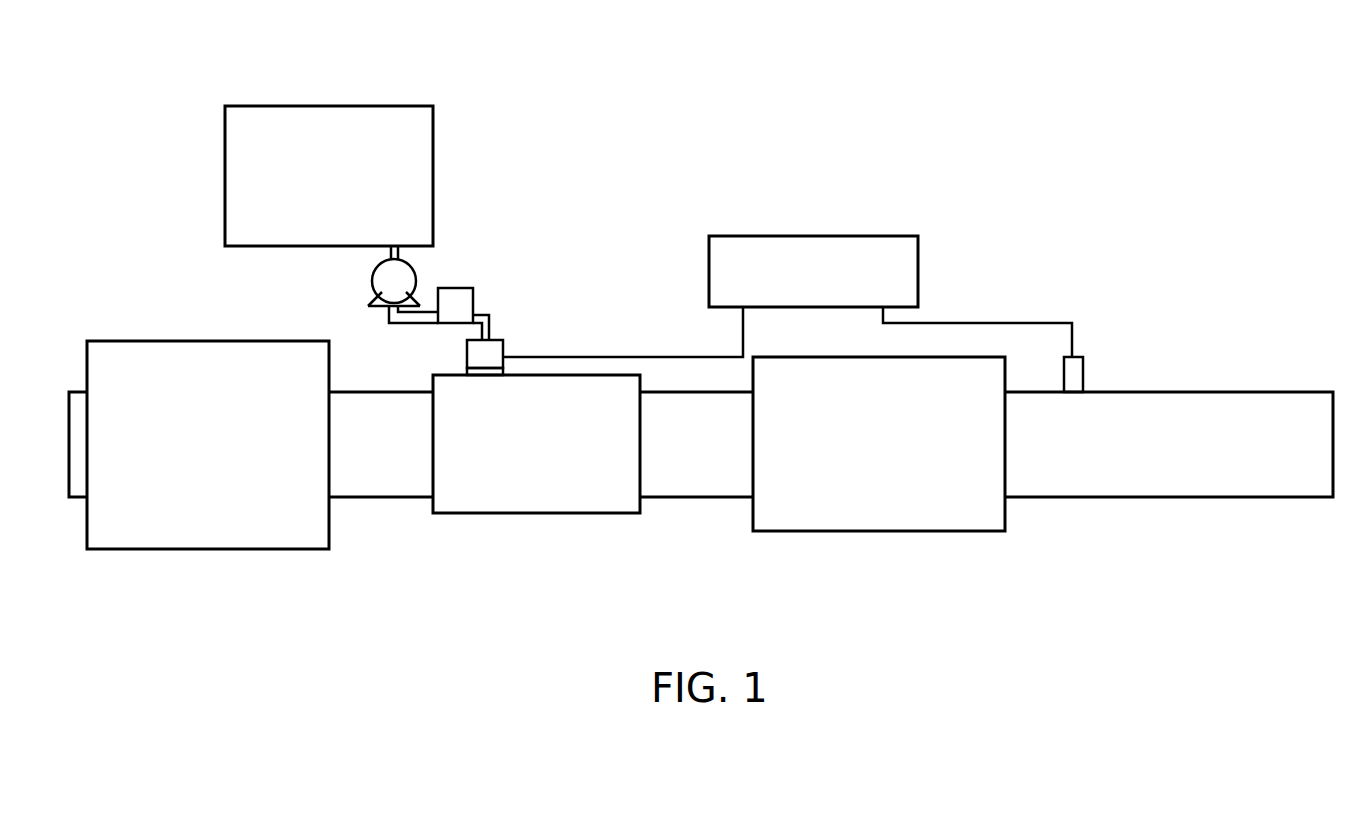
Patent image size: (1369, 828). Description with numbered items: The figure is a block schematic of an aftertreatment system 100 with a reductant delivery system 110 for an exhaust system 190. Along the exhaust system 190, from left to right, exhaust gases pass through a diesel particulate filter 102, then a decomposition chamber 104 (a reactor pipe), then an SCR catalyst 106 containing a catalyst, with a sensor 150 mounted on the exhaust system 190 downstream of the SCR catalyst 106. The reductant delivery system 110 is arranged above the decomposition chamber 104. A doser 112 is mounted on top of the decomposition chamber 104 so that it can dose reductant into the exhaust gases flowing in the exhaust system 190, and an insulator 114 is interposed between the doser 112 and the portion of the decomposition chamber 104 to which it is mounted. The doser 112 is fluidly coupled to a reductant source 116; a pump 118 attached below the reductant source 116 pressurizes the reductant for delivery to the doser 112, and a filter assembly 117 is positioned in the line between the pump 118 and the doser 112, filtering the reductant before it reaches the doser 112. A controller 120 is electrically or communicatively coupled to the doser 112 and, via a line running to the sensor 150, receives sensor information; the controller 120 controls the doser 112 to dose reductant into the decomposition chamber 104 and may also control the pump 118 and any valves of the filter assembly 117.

The aftertreatment system 100 is at (952, 305).
The diesel particulate filter 102 is at (237, 550).
The decomposition chamber 104 is at (631, 374).
The SCR catalyst 106 is at (888, 532).
The reductant delivery system 110 is at (590, 288).
The doser 112 is at (504, 350).
The insulator 114 is at (467, 371).
The reductant source 116 is at (391, 105).
The filter assembly 117 is at (474, 300).
The pump 118 is at (372, 283).
The controller 120 is at (791, 235).
The sensor 150 is at (1095, 376).
The exhaust system 190 is at (425, 577).